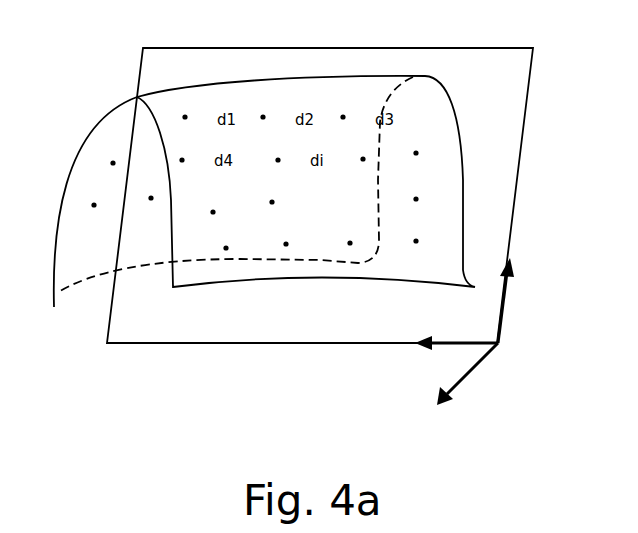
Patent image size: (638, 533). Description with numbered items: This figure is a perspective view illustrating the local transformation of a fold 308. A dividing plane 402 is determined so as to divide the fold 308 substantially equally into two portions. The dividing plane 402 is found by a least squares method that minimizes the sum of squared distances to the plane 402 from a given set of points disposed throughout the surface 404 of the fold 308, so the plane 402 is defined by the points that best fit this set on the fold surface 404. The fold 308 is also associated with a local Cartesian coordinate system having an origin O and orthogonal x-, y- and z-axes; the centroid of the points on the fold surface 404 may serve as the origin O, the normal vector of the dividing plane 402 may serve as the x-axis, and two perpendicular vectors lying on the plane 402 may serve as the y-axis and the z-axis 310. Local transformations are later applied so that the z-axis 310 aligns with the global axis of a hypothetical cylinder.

The dividing plane 402 is at (493, 125).
The fold surface 404 is at (107, 107).
The fold 308 is at (80, 262).
The z-axis 310 is at (502, 313).